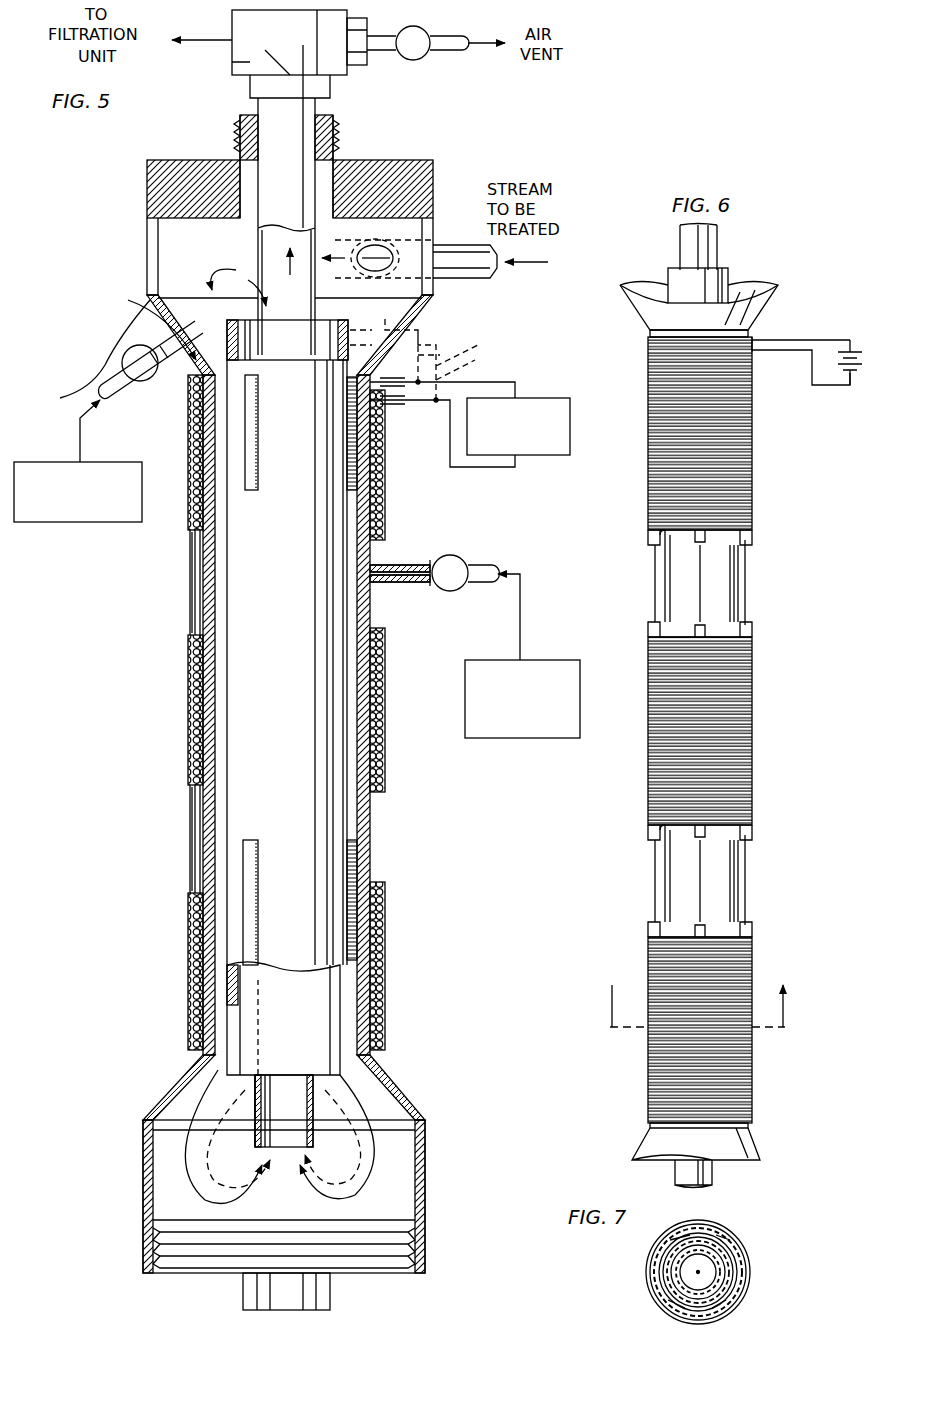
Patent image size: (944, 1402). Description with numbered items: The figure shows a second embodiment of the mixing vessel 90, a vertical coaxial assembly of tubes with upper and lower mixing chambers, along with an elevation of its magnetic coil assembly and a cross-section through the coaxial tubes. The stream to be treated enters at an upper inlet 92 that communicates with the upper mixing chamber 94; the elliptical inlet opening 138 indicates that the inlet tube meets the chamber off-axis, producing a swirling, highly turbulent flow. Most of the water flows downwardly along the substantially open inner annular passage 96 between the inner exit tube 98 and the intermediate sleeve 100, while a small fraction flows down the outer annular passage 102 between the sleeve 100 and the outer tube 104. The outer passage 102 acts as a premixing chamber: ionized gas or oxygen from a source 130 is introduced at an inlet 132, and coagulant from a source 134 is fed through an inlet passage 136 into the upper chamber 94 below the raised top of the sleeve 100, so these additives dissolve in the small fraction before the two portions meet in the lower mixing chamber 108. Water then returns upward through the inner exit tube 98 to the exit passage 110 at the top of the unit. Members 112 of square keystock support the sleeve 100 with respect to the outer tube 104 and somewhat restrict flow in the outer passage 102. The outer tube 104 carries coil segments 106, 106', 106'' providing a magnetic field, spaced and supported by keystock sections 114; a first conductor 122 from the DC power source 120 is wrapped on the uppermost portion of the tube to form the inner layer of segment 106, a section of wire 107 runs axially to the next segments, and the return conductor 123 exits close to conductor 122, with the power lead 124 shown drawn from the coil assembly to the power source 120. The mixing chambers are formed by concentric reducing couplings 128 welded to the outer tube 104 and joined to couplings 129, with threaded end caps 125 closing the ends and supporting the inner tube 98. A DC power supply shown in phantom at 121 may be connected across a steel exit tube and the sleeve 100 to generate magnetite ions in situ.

In FIG. 5, the mixing vessel 90 is at (135, 690).
In FIG. 5, the upper inlet 92 is at (455, 245).
In FIG. 5, the upper mixing chamber 94 is at (390, 326).
In FIG. 5, the inner annular passage 96 is at (252, 345).
In FIG. 7, the inner annular passage 96 is at (716, 1288).
In FIG. 5, the inner exit tube 98 is at (258, 264).
In FIG. 6, the inner exit tube 98 is at (718, 246).
In FIG. 7, the inner exit tube 98 is at (738, 1250).
In FIG. 5, the intermediate sleeve 100 is at (227, 406).
In FIG. 6, the intermediate sleeve 100 is at (668, 278).
In FIG. 7, the intermediate sleeve 100 is at (664, 1262).
In FIG. 5, the outer annular passage 102 is at (215, 545).
In FIG. 5, the outer tube 104 is at (195, 570).
In FIG. 6, the outer tube 104 is at (745, 588).
In FIG. 7, the outer tube 104 is at (690, 1310).
In FIG. 5, the coil segment 106 is at (260, 457).
In FIG. 6, the coil segment 106 is at (667, 433).
In FIG. 5, the second coil segment 106' is at (247, 710).
In FIG. 6, the second coil segment 106' is at (665, 731).
In FIG. 5, the third coil segment 106'' is at (245, 966).
In FIG. 6, the third coil segment 106'' is at (683, 1030).
In FIG. 7, the third coil segment 106'' is at (665, 1272).
In FIG. 5, the section of wire 107 is at (190, 603).
In FIG. 6, the section of wire 107 is at (665, 576).
In FIG. 5, the lower mixing chamber 108 is at (160, 1207).
In FIG. 5, the exit passage 110 is at (232, 30).
In FIG. 5, the supporting members 112 is at (252, 397).
In FIG. 7, the supporting members 112 is at (708, 1238).
In FIG. 6, the keystock sections 114 is at (752, 545).
In FIG. 5, the DC power source 120 is at (570, 412).
In FIG. 6, the DC power source 120 is at (862, 350).
In FIG. 5, the DC power supply connection 121 is at (436, 357).
In FIG. 5, the first conductor 122 is at (505, 382).
In FIG. 5, the return conductor 123 is at (470, 467).
In FIG. 6, the power lead 124 is at (780, 360).
In FIG. 5, the threaded end cap 125 is at (240, 160).
In FIG. 5, the concentric reducing coupling 128 is at (420, 318).
In FIG. 5, the coupling 129 is at (143, 1160).
In FIG. 5, the ionized gas source 130 is at (495, 738).
In FIG. 5, the inlet 132 is at (405, 565).
In FIG. 5, the coagulant source 134 is at (82, 522).
In FIG. 5, the inlet passage 136 is at (160, 342).
In FIG. 5, the inlet opening 138 is at (375, 248).